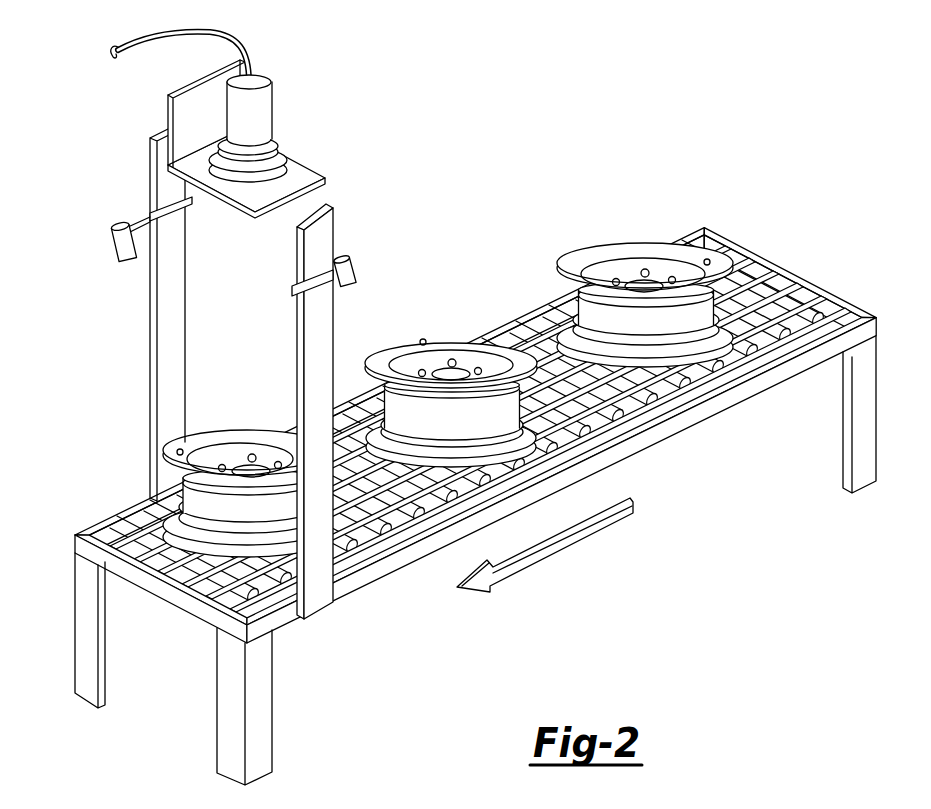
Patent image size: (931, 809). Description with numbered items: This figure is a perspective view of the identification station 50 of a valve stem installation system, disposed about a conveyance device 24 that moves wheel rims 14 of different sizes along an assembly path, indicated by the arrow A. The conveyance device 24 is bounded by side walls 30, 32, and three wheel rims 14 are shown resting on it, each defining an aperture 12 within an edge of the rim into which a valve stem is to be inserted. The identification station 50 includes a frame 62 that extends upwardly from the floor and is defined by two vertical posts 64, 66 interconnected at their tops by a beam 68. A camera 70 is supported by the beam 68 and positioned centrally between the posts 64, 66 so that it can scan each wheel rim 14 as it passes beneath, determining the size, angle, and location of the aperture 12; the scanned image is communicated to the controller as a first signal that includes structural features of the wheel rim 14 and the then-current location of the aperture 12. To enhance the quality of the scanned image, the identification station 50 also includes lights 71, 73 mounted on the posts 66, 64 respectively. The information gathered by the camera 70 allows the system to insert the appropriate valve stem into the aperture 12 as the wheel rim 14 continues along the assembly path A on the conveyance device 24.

The aperture 12 is at (418, 363).
The wheel rim 14 is at (455, 342).
The conveyance device 24 is at (475, 505).
The side wall 30 is at (778, 376).
The side wall 32 is at (503, 328).
The identification station 50 is at (218, 313).
The frame 62 is at (223, 339).
The vertical post 64 is at (322, 365).
The vertical post 66 is at (155, 333).
The vertical beam 68 is at (310, 210).
The camera 70 is at (262, 143).
The light 71 is at (115, 250).
The light 73 is at (346, 261).
The assembly path A is at (527, 558).